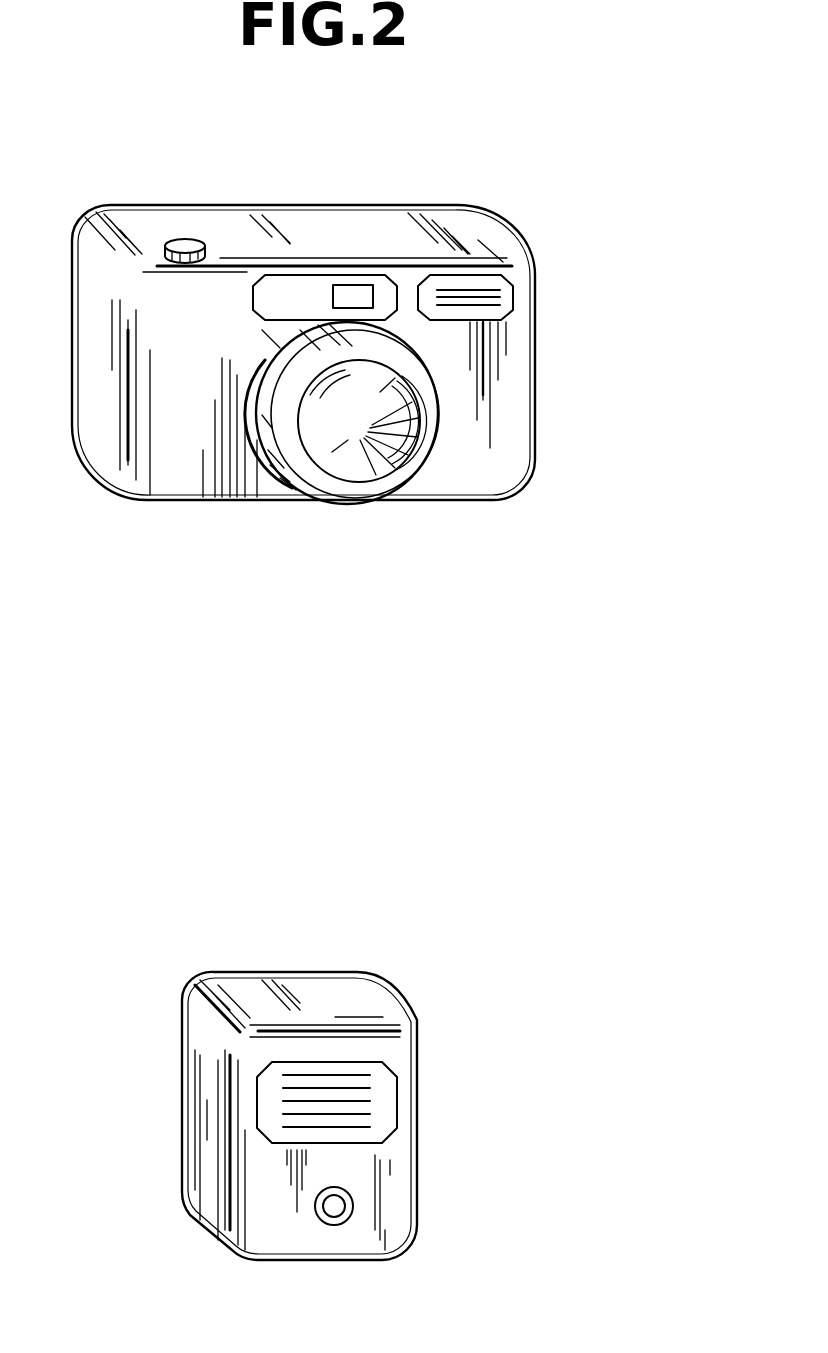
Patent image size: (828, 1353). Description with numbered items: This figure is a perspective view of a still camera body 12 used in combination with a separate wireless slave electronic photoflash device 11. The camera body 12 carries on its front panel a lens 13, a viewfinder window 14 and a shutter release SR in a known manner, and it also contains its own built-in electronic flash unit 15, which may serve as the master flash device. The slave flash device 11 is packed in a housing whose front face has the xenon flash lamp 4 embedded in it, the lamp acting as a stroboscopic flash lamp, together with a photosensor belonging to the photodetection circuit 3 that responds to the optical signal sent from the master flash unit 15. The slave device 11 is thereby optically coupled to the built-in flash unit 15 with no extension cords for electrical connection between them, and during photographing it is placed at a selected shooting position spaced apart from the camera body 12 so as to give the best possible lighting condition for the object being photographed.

The still camera body 12 is at (480, 240).
The shutter release SR is at (184, 239).
The viewfinder window 14 is at (356, 290).
The built-in electronic flash unit 15 is at (507, 300).
The lens 13 is at (352, 485).
The wireless electronic photoflash device 11 is at (323, 1000).
The xenon discharge tube 4 is at (383, 1087).
The photodetection circuit 3 is at (340, 1197).